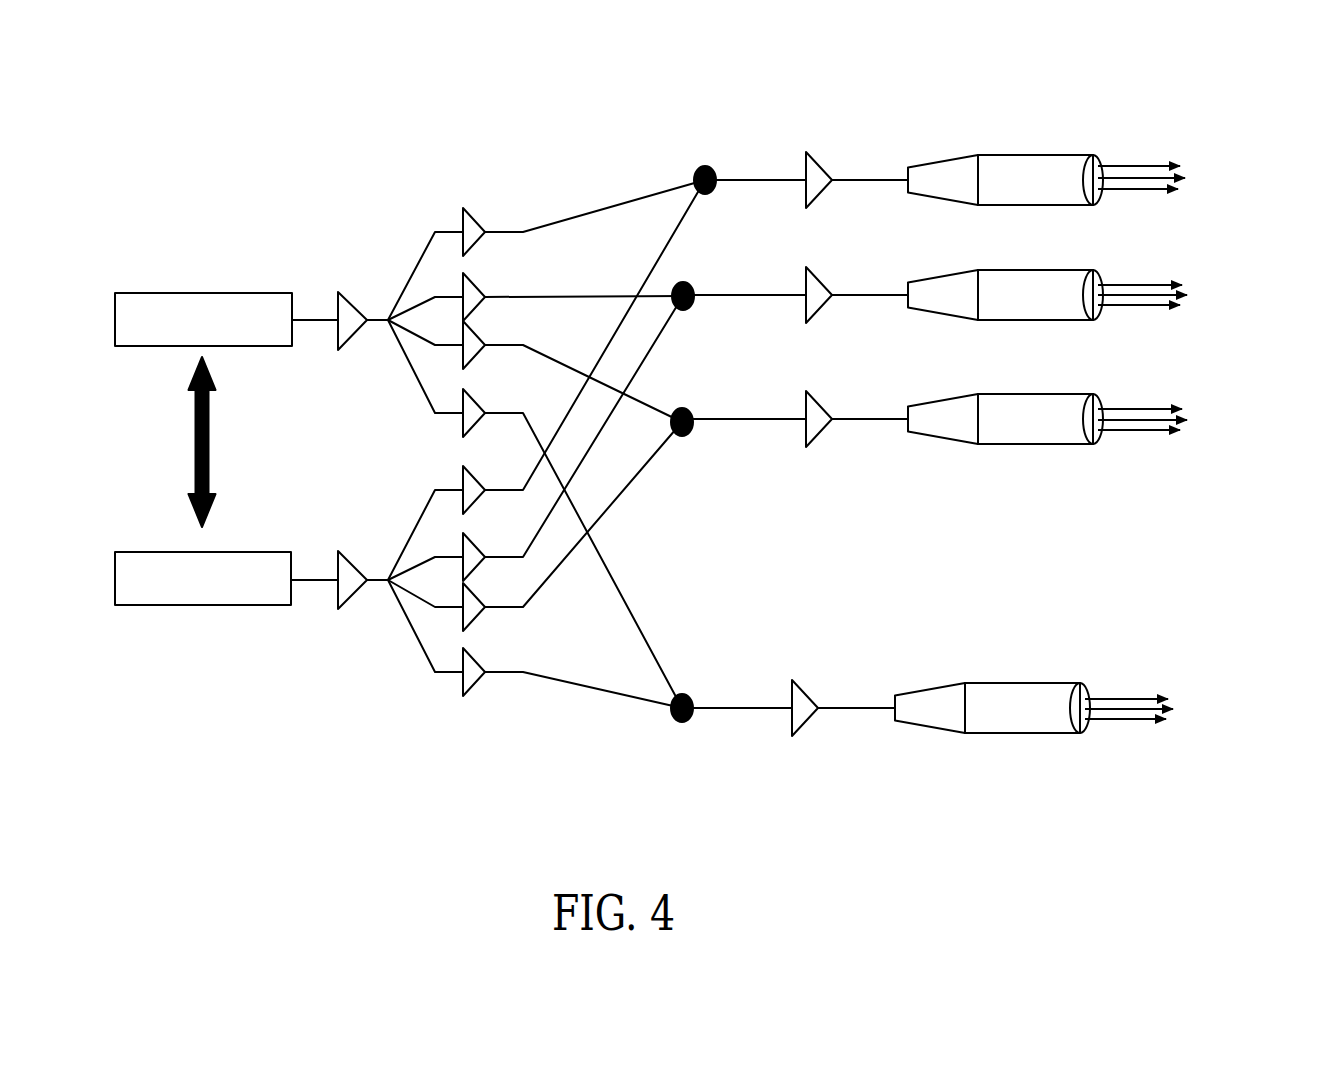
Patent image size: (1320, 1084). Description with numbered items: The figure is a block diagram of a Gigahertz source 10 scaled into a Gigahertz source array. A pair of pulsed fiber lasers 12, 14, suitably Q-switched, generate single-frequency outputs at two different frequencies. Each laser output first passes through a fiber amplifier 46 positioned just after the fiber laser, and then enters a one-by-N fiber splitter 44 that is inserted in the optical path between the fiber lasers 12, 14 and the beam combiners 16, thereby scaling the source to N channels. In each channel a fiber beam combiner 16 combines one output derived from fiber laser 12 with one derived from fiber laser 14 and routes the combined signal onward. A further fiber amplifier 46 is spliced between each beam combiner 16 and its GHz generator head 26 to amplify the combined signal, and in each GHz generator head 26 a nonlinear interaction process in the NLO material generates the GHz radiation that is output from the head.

The Gigahertz source 10 is at (343, 190).
The pulsed fiber laser 12 is at (196, 288).
The pulsed fiber laser 14 is at (213, 612).
The fiber beam combiner 16 is at (695, 177).
The GHz generator head 26 is at (1047, 142).
The 1×N fiber splitter 44 is at (387, 605).
The fiber amplifier 46 is at (348, 297).